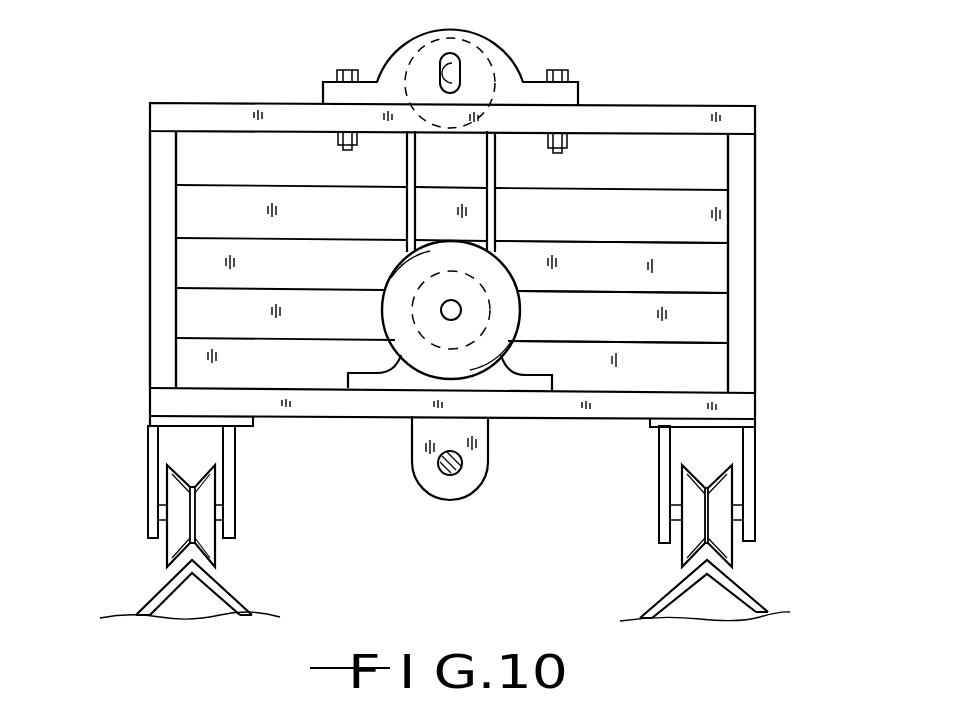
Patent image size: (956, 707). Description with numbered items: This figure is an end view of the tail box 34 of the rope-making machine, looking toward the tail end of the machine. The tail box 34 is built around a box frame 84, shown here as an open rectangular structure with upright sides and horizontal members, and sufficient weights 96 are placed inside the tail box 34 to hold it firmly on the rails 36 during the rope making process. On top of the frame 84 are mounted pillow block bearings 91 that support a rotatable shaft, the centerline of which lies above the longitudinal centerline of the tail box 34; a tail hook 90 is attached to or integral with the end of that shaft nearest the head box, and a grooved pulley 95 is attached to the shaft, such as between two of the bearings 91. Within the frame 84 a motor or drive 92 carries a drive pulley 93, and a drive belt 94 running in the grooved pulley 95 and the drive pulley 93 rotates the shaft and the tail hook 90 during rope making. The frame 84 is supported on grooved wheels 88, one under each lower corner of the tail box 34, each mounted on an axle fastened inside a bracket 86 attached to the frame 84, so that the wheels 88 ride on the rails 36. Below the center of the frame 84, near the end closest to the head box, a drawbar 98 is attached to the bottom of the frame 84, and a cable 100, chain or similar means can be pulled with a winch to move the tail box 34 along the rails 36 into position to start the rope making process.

The tail box 34 is at (641, 102).
The box frame 84 is at (162, 262).
The weights 96 is at (710, 267).
The pillow block bearings 91 is at (398, 62).
The grooved pulley 95 is at (435, 54).
The tail hook 90 is at (458, 60).
The drive belt 94 is at (497, 210).
The motor or drive 92 is at (508, 312).
The drive pulley 93 is at (425, 310).
The drawbar 98 is at (476, 463).
The cable 100 is at (440, 468).
The bracket 86 is at (150, 446).
The wheels 88 is at (178, 513).
The rails 36 is at (146, 590).